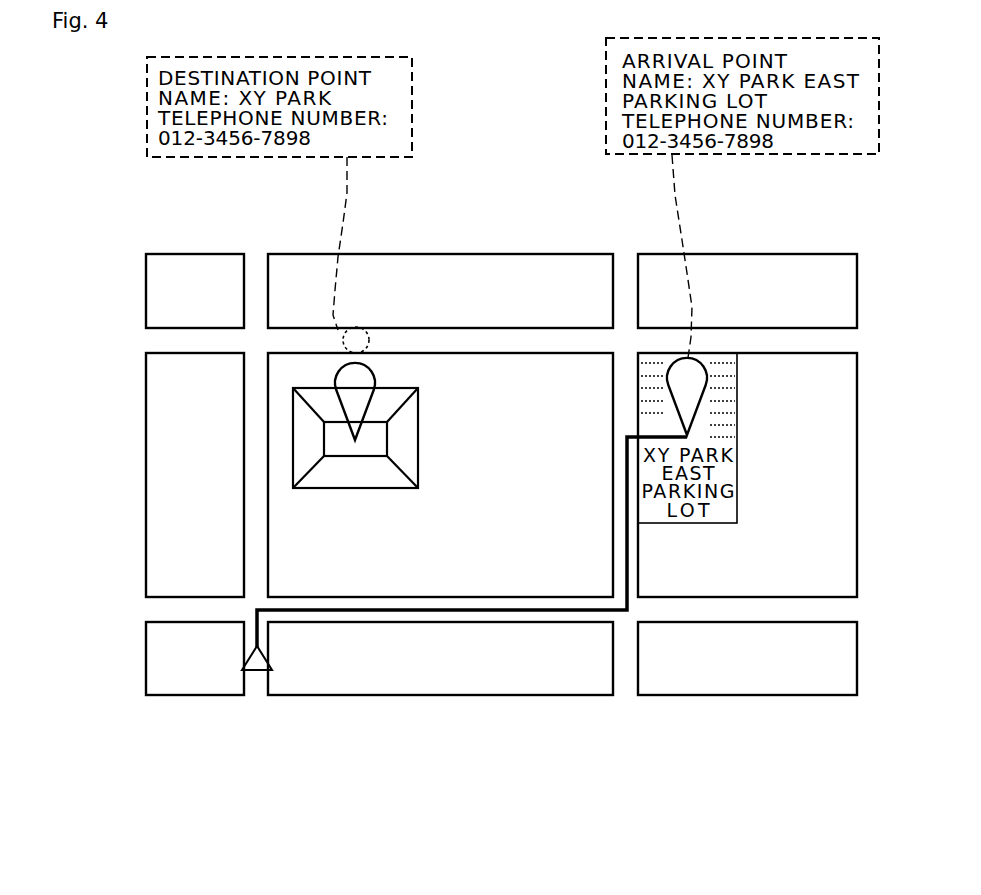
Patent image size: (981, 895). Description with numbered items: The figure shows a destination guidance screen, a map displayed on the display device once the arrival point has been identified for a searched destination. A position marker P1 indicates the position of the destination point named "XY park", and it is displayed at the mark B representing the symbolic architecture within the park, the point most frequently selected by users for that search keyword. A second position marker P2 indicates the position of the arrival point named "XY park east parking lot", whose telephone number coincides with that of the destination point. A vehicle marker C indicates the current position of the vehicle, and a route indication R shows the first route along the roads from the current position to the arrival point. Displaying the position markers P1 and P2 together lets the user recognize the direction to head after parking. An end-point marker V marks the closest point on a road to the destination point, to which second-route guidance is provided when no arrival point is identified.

The position marker P1 is at (301, 309).
The position marker P2 is at (723, 306).
The end-point marker V is at (405, 265).
The mark B is at (398, 588).
The vehicle marker C is at (271, 717).
The route indication R is at (472, 614).